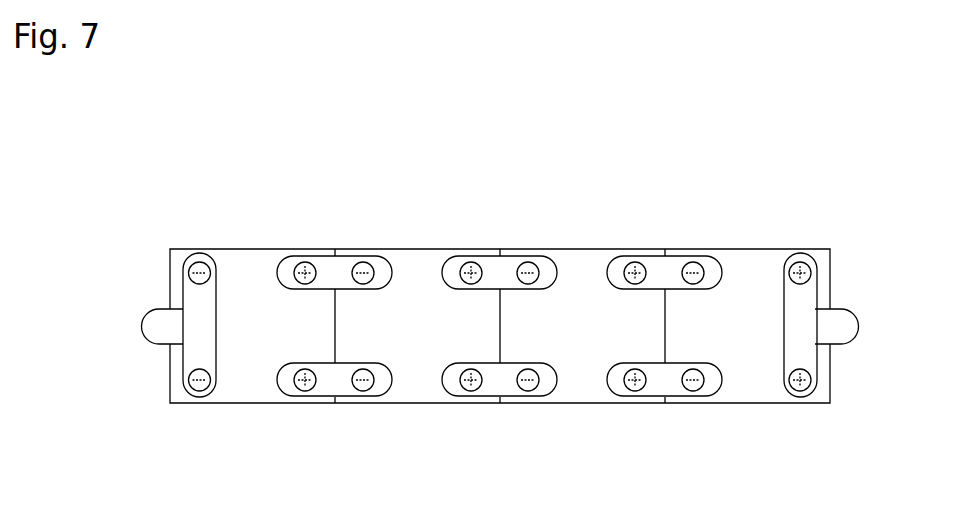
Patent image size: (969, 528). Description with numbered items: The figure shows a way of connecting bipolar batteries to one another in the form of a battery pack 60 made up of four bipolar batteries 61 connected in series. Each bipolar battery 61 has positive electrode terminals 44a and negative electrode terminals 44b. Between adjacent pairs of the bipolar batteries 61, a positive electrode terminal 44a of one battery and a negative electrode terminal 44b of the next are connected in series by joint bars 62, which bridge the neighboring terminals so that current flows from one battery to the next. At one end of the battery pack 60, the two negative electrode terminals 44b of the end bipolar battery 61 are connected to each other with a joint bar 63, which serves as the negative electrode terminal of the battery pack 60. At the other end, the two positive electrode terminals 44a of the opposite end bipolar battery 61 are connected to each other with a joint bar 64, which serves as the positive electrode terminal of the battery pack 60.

The battery pack 60 is at (737, 160).
The bipolar battery 61 is at (252, 253).
The joint bar 62 is at (345, 257).
The joint bar 63 is at (158, 335).
The joint bar 64 is at (840, 333).
The positive electrode terminal 44a is at (800, 253).
The negative electrode terminal 44b is at (198, 250).